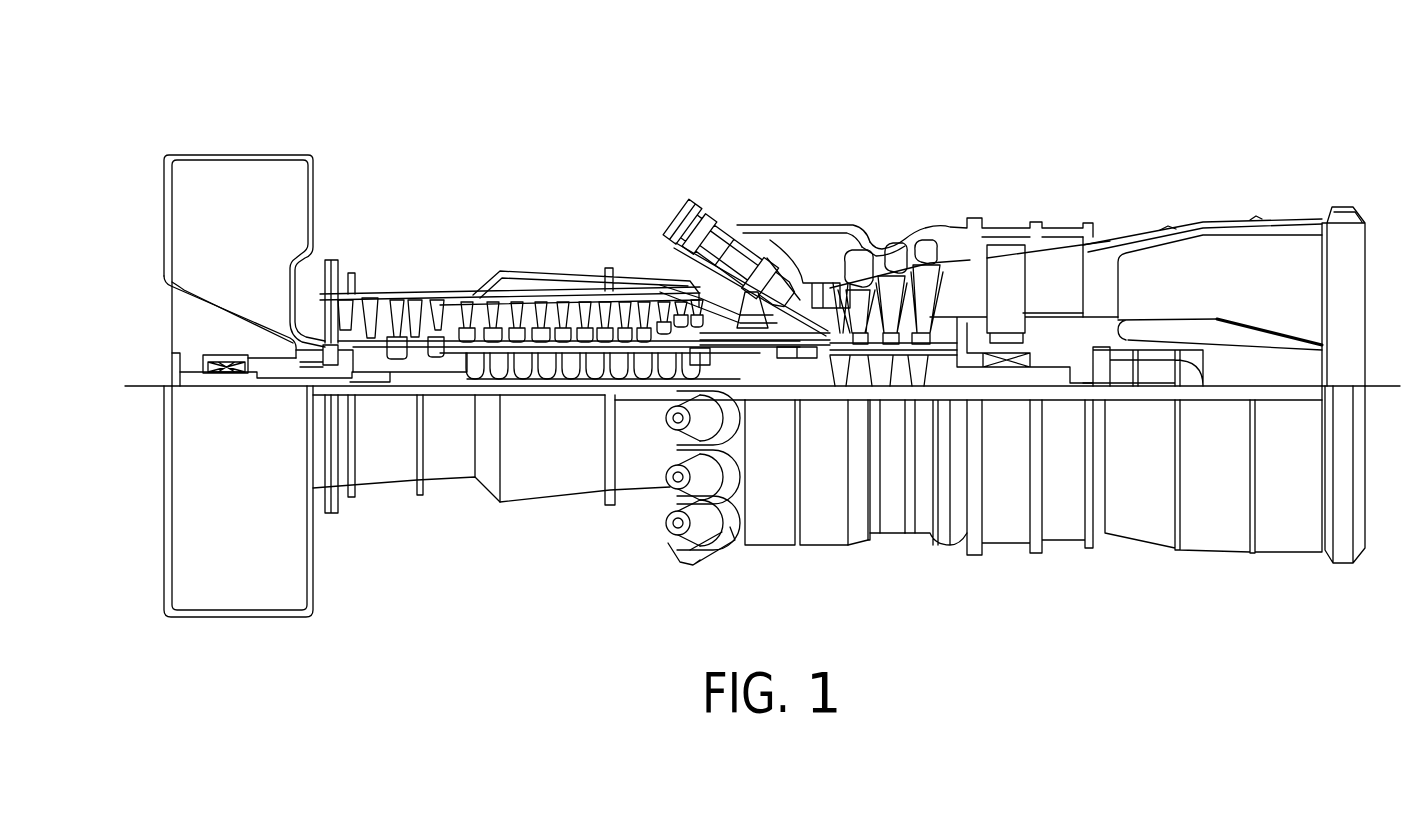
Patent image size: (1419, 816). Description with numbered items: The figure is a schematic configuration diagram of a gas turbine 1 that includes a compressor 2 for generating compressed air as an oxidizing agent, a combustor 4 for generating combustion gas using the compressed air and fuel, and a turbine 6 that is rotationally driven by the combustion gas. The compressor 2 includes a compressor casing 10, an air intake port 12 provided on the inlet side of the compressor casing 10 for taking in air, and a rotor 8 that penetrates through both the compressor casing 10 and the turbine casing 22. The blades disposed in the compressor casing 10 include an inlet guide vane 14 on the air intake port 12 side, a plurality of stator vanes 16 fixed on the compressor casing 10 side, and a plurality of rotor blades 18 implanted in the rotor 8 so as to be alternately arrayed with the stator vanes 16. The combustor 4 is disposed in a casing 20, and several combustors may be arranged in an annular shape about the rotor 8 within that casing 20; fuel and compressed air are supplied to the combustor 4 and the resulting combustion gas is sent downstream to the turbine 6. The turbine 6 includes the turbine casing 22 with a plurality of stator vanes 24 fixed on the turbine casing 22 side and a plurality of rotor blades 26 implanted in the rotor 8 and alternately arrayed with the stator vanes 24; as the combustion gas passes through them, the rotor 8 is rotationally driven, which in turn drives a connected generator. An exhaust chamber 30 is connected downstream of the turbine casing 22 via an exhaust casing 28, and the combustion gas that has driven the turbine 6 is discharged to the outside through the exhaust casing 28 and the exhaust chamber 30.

The gas turbine 1 is at (781, 108).
The compressor 2 is at (410, 215).
The combustor 4 is at (703, 194).
The turbine 6 is at (983, 211).
The rotor 8 is at (680, 300).
The compressor casing 10 is at (393, 297).
The air intake port 12 is at (200, 241).
The inlet guide vane 14 is at (349, 313).
The stator vanes 16 is at (398, 298).
The rotor blades 18 is at (373, 303).
The casing 20 is at (672, 239).
The turbine casing 22 is at (913, 233).
The stator vanes 24 is at (863, 290).
The rotor blades 26 is at (838, 290).
The exhaust casing 28 is at (1014, 230).
The exhaust chamber 30 is at (1283, 216).